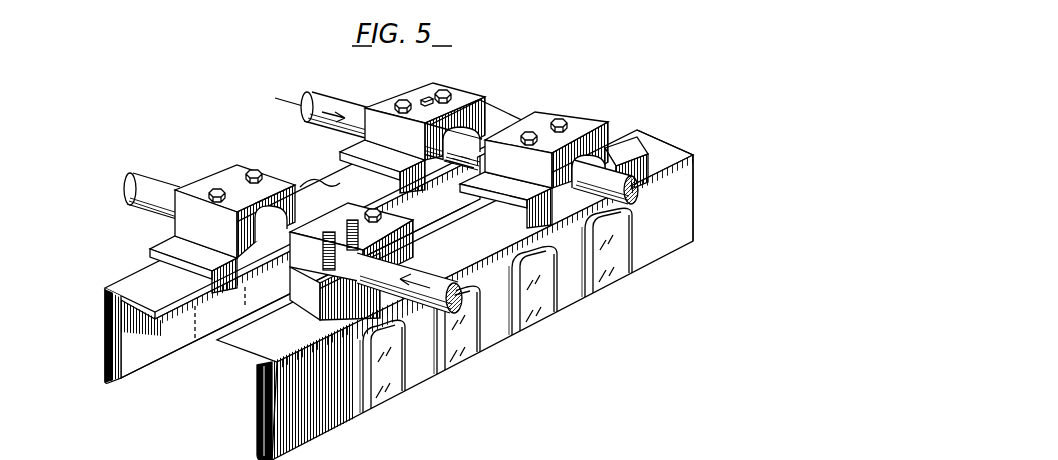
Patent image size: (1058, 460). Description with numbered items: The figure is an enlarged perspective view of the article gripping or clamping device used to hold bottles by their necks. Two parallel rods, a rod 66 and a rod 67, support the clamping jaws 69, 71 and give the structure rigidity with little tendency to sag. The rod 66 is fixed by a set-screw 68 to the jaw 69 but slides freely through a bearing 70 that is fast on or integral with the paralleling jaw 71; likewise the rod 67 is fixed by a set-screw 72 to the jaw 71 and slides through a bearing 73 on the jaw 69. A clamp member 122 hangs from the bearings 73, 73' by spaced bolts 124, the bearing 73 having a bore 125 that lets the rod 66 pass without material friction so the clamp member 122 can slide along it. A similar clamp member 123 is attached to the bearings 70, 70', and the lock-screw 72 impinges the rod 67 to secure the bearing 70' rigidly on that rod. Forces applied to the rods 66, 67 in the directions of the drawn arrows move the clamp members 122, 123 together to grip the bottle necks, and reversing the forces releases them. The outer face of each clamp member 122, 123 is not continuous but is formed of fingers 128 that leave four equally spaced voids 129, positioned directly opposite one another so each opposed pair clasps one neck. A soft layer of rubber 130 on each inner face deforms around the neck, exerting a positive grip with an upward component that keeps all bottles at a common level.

The rod 66 is at (335, 102).
The rod 67 is at (152, 182).
The set-screw 68 is at (428, 98).
The clamping jaw 69 is at (320, 169).
The bearing 70 is at (554, 152).
The bearing 70' is at (379, 261).
The clamping jaw 71 is at (670, 135).
The lock-screw 72 is at (358, 213).
The bearing 73 is at (222, 212).
The bearing 73' is at (434, 134).
The clamp member 122 is at (105, 347).
The clamp member 123 is at (407, 295).
The bolts 124 is at (210, 186).
The bore 125 is at (248, 227).
The fingers 128 is at (427, 378).
The voids 129 is at (207, 318).
The layer of rubber 130 is at (147, 362).